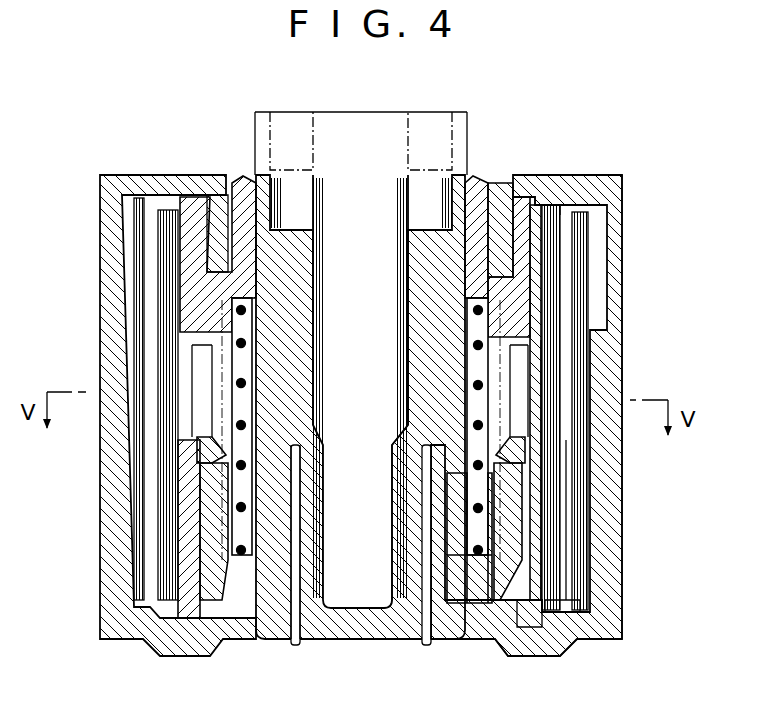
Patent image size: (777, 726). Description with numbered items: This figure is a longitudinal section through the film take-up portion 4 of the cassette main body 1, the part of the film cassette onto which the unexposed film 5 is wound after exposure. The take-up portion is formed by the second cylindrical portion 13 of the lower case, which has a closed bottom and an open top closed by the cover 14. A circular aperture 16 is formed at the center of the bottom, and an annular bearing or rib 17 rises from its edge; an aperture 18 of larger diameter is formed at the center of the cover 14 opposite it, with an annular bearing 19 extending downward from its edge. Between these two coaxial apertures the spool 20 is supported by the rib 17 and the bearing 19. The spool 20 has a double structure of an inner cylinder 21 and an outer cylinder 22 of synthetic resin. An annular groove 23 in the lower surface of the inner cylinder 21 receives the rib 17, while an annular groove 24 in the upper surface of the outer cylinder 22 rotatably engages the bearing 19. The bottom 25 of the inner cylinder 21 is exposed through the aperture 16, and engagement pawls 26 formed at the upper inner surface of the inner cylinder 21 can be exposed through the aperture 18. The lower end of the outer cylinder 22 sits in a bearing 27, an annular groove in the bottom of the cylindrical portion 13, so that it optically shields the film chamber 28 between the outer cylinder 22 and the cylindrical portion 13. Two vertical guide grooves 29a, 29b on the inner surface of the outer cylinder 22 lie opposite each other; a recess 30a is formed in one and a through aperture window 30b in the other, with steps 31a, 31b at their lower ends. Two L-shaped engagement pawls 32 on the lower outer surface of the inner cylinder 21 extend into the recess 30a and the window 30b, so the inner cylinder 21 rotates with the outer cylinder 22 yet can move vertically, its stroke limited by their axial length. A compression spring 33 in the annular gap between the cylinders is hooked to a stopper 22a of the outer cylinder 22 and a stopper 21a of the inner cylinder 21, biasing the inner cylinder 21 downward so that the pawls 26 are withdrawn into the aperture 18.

The cassette main body 1 is at (656, 238).
The film take-up portion 4 is at (622, 528).
The unexposed film 5 is at (566, 478).
The second cylindrical portion 13 is at (600, 615).
The cover 14 is at (563, 176).
The circular aperture 16 is at (412, 625).
The annular bearing or rib 17 is at (447, 622).
The aperture 18 is at (483, 197).
The annular bearing 19 is at (500, 210).
The spool 20 is at (523, 287).
The inner cylinder 21 is at (417, 263).
The stopper 21a is at (470, 560).
The outer cylinder 22 is at (536, 312).
The stopper 22a is at (467, 308).
The annular groove 23 is at (428, 570).
The annular groove 24 is at (548, 220).
The bottom 25 is at (320, 641).
The engagement pawls 26 is at (430, 178).
The bearing 27 is at (533, 657).
The film chamber 28 is at (578, 362).
The guide groove 29a is at (520, 573).
The guide groove 29b is at (205, 545).
The recess 30a is at (543, 453).
The through aperture window 30b is at (185, 358).
The step 31a is at (522, 500).
The step 31b is at (195, 482).
The engagement pawls 32 is at (197, 450).
The compression spring 33 is at (248, 345).